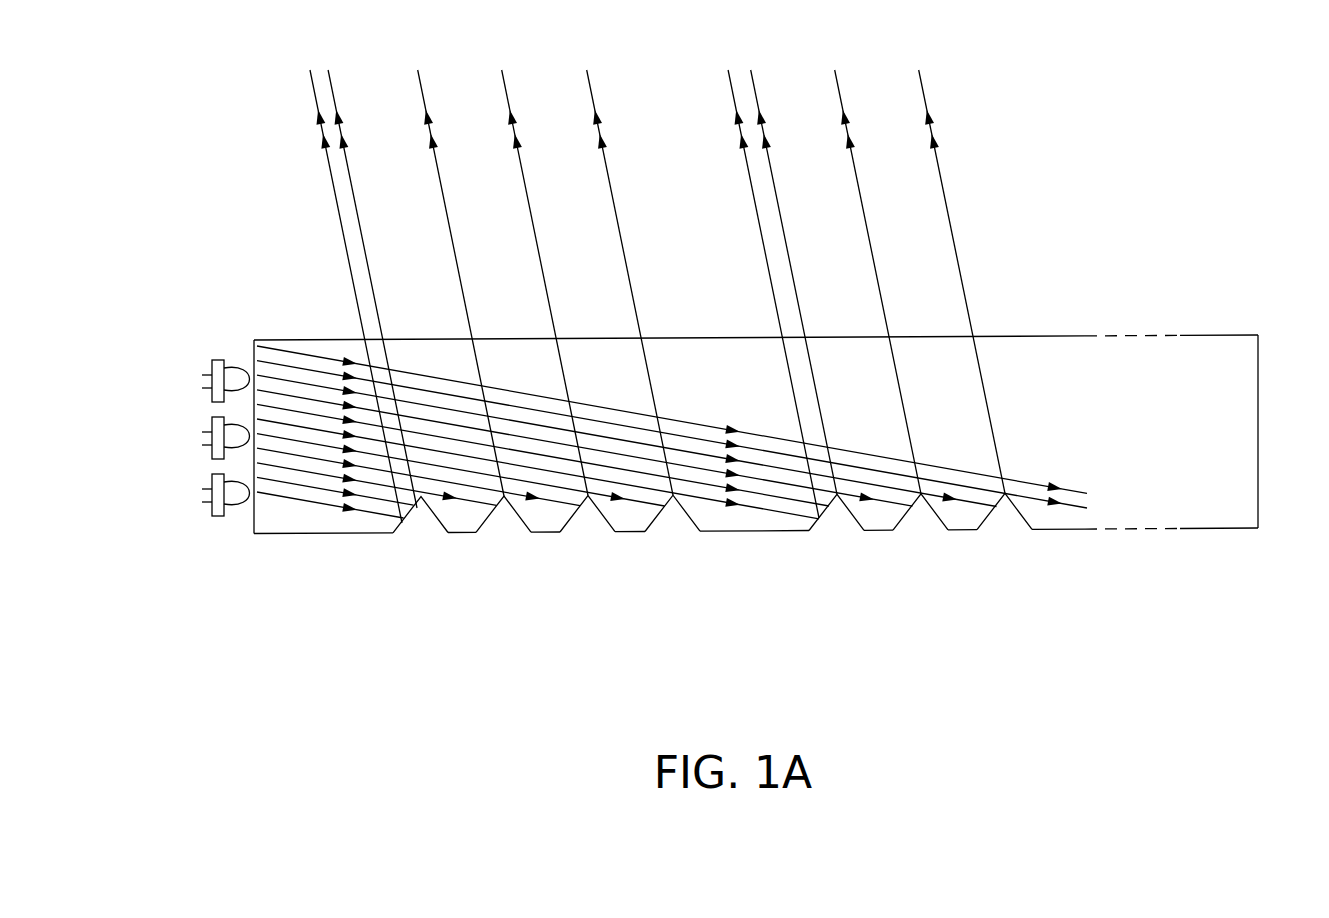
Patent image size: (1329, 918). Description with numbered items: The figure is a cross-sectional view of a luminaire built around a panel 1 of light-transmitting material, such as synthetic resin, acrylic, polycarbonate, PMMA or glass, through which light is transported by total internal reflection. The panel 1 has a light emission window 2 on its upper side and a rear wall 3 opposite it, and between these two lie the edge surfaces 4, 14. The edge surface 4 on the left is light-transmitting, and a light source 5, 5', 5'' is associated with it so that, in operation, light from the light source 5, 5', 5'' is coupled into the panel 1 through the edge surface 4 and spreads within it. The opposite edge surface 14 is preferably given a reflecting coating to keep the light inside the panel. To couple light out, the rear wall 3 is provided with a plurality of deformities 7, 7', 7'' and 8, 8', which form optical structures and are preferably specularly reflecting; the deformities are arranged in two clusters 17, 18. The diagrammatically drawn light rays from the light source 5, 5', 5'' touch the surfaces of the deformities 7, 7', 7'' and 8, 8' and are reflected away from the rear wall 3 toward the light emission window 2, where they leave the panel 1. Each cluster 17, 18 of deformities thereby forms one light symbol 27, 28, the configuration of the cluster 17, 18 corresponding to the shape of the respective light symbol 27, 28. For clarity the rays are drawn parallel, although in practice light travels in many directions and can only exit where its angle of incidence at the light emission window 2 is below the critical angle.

The panel 1 is at (1064, 204).
The light emission window 2 is at (722, 339).
The rear wall 3 is at (1073, 529).
The edge surface 4 is at (251, 536).
The light source 5 is at (195, 378).
The light source 5' is at (194, 435).
The light source 5'' is at (193, 492).
The deformity 7 is at (420, 539).
The deformity 7' is at (503, 538).
The deformity 7'' is at (589, 539).
The deformity 8 is at (836, 537).
The deformity 8' is at (920, 537).
The edge surface 14 is at (1259, 464).
The cluster of deformities 17 is at (700, 558).
The cluster of deformities 18 is at (1032, 556).
The light symbol 27 is at (475, 262).
The light symbol 28 is at (851, 260).